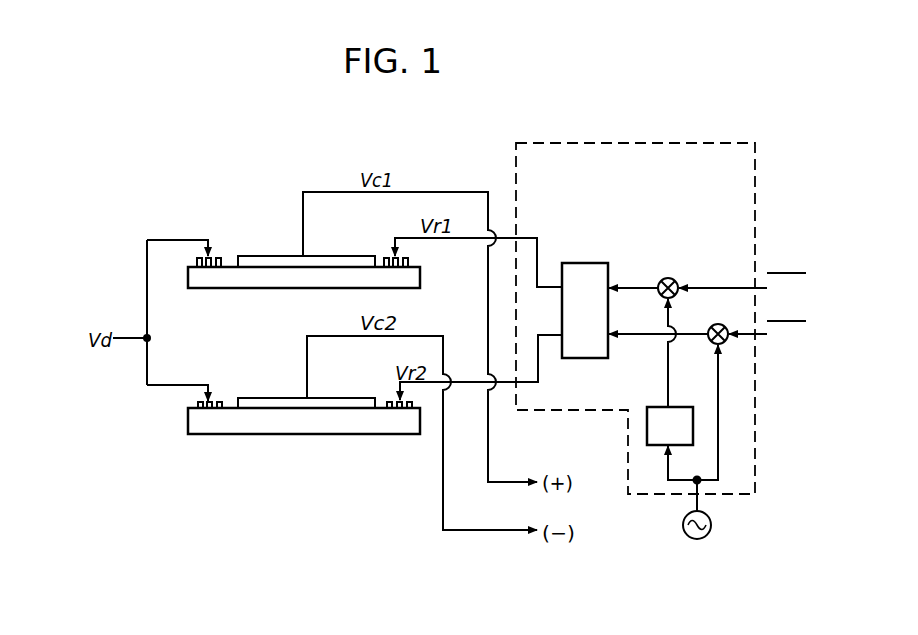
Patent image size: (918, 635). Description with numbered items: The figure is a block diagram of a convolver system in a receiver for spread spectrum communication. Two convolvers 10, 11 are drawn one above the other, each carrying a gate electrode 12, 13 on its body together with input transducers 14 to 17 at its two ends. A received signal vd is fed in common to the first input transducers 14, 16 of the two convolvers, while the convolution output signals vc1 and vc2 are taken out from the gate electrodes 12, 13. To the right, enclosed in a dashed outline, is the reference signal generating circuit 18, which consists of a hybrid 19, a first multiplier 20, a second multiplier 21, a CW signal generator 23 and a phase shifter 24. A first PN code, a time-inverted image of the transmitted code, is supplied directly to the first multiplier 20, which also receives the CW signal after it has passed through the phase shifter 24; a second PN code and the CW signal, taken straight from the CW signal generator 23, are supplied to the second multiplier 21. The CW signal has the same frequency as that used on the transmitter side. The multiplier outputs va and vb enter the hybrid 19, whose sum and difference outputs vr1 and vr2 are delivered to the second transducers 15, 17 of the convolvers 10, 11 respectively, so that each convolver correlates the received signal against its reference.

The convolver 10 is at (203, 282).
The convolver 11 is at (215, 429).
The gate electrode 12 is at (323, 257).
The gate electrode 13 is at (328, 380).
The input transducer 14 is at (221, 257).
The input transducer 15 is at (409, 260).
The input transducer 16 is at (197, 404).
The input transducer 17 is at (421, 395).
The reference signal generating circuit 18 is at (592, 143).
The hybrid 19 is at (593, 265).
The first multiplier 20 is at (676, 295).
The second multiplier 21 is at (711, 341).
The CW signal generator 23 is at (711, 526).
The phase shifter 24 is at (652, 445).